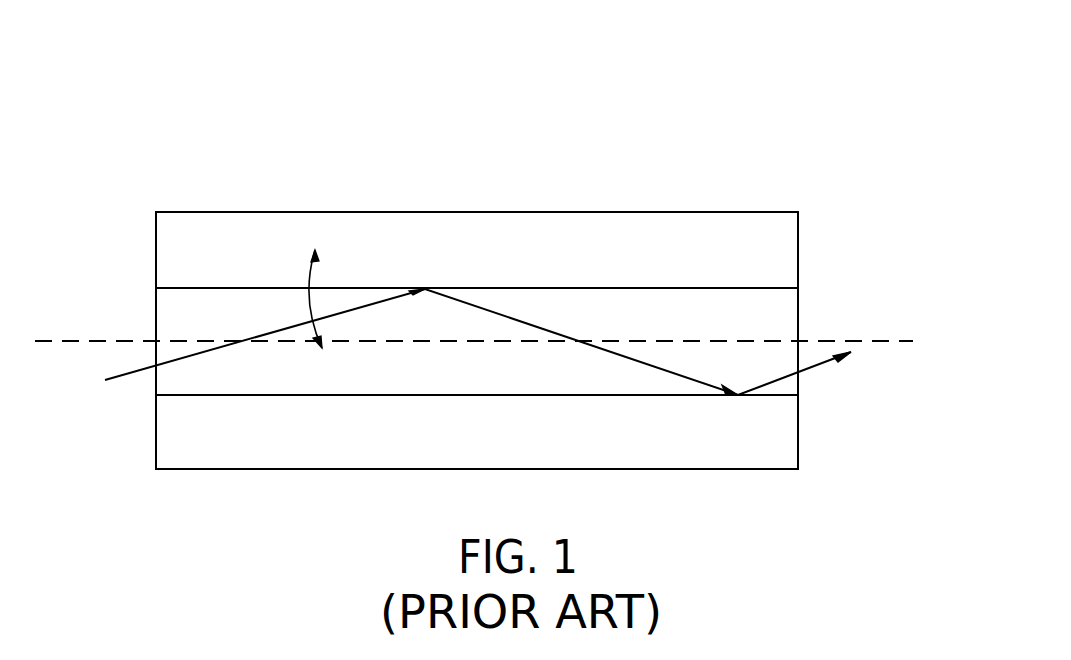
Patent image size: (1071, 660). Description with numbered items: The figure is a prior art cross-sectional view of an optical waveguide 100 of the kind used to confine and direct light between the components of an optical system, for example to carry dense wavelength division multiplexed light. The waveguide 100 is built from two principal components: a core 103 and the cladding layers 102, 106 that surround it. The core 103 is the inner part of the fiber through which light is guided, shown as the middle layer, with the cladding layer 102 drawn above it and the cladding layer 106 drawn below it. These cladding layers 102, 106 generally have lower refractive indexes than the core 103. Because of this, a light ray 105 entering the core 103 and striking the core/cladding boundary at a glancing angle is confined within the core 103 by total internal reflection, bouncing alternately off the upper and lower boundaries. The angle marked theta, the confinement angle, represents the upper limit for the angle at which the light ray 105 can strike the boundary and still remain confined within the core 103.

The optical waveguide 100 is at (838, 150).
The cladding layer 102 is at (765, 242).
The core 103 is at (773, 310).
The light ray 105 is at (120, 377).
The cladding layer 106 is at (773, 440).